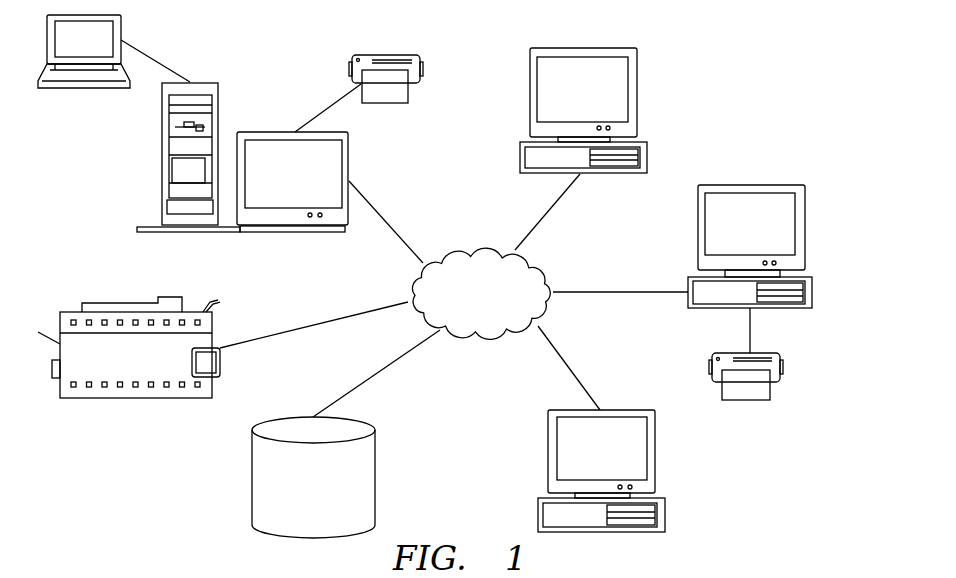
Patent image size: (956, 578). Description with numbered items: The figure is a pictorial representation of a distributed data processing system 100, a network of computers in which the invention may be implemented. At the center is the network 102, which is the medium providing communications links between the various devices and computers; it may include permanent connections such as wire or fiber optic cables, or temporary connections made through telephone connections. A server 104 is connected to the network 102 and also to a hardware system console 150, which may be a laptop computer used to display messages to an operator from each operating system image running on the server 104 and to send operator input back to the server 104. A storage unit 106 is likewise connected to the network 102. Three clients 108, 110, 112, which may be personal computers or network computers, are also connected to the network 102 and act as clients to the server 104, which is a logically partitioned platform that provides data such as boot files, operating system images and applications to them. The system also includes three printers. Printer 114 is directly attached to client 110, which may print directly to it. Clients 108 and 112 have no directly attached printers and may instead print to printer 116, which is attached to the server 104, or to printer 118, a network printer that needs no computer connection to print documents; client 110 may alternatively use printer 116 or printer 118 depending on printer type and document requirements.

The distributed data processing system 100 is at (741, 110).
The network 102 is at (500, 305).
The server 104 is at (312, 186).
The storage unit 106 is at (332, 499).
The client 108 is at (602, 106).
The client 110 is at (770, 241).
The client 112 is at (620, 462).
The printer 114 is at (783, 368).
The printer 116 is at (424, 70).
The printer 118 is at (150, 369).
The hardware system console 150 is at (102, 50).